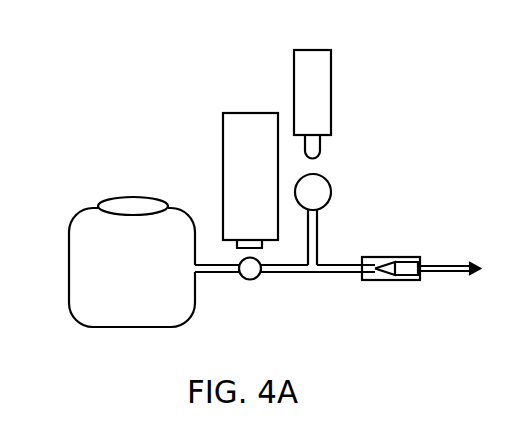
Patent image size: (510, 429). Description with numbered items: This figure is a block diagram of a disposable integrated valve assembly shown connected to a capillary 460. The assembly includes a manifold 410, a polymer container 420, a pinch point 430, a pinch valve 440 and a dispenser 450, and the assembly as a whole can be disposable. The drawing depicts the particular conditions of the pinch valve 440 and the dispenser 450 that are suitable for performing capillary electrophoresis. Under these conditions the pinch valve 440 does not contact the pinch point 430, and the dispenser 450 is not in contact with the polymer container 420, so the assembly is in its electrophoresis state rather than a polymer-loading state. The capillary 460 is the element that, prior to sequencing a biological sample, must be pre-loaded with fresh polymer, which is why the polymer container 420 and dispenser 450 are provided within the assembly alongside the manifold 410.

The manifold 410 is at (88, 212).
The polymer container 420 is at (318, 183).
The pinch point 430 is at (252, 276).
The pinch valve 440 is at (235, 142).
The dispenser 450 is at (317, 88).
The capillary 460 is at (436, 263).